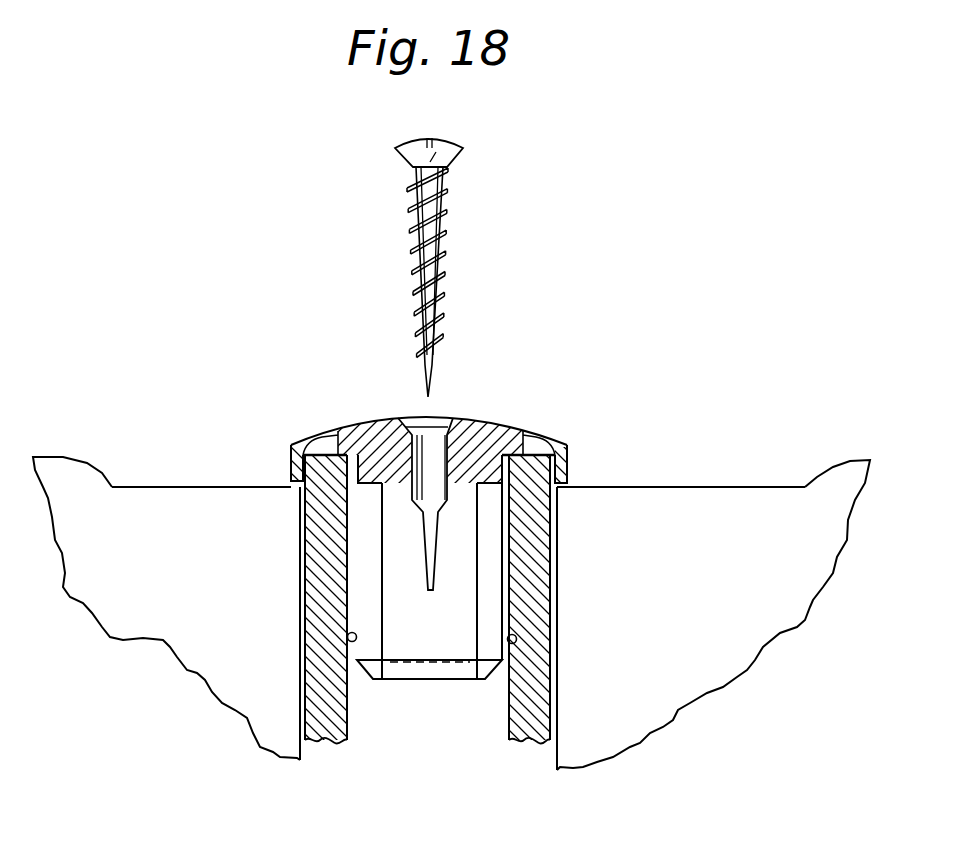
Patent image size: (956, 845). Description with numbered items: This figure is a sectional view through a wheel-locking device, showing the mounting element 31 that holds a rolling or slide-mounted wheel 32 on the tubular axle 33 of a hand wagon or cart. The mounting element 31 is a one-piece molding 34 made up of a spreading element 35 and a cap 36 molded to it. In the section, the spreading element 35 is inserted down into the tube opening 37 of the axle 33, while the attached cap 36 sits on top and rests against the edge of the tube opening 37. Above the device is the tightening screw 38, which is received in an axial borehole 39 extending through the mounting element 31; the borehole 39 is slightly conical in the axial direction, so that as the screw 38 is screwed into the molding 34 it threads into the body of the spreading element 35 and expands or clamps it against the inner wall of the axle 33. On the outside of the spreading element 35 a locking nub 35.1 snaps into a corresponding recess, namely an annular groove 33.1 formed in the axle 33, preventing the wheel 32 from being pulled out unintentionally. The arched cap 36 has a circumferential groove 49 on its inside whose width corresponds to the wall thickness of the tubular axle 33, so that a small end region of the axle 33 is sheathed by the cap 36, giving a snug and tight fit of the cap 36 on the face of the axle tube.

The mounting element 31 is at (493, 419).
The wheel 32 is at (770, 520).
The tubular axle 33 is at (447, 599).
The annular groove 33.1 is at (347, 640).
The one-piece molding 34 is at (439, 507).
The spreading element 35 is at (372, 585).
The locking nub 35.1 is at (516, 637).
The cap 36 is at (477, 402).
The tube opening 37 is at (338, 432).
The tightening screw 38 is at (448, 198).
The axial borehole 39 is at (436, 452).
The circumferential groove 49 is at (558, 440).